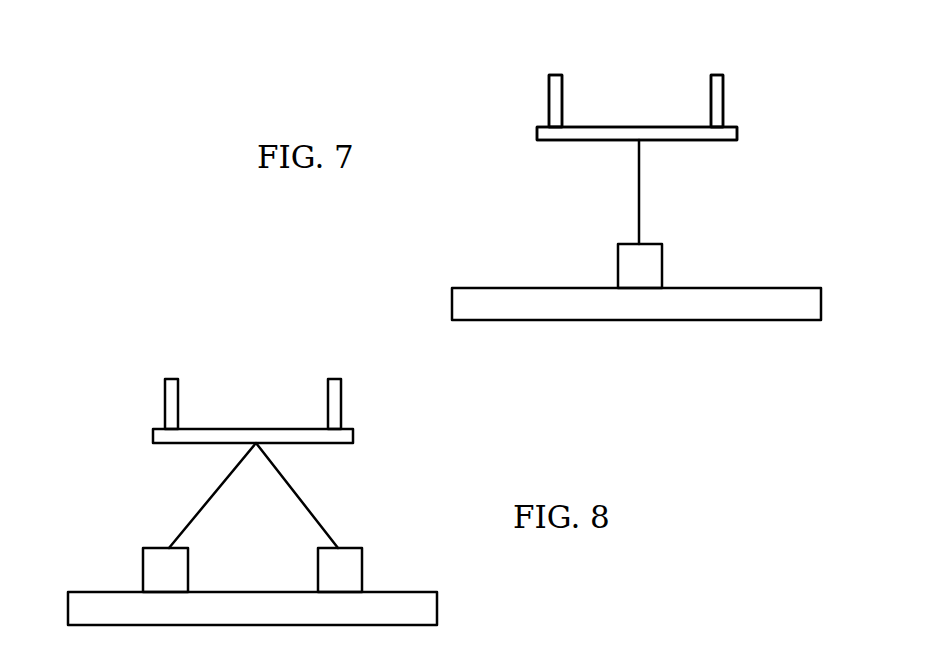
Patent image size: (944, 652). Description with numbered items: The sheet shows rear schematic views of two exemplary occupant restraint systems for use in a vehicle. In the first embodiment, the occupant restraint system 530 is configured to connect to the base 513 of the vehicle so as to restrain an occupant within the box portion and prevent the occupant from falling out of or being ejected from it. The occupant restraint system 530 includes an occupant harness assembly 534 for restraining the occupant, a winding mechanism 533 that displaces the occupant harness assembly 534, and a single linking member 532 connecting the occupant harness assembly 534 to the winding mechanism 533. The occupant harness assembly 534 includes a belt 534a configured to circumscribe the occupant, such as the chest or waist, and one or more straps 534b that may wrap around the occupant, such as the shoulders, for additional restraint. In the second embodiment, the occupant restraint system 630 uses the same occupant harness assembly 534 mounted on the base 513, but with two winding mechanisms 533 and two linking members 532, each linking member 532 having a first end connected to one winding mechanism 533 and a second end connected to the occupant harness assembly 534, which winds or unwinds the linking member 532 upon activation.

In FIG. 7, the occupant restraint system 530 is at (512, 57).
In FIG. 8, the occupant restraint system 630 is at (228, 360).
In FIG. 7, the base 513 is at (563, 313).
In FIG. 8, the base 513 is at (407, 600).
In FIG. 7, the linking member 532 is at (643, 155).
In FIG. 8, the linking member 532 is at (228, 480).
In FIG. 7, the winding mechanism 533 is at (654, 268).
In FIG. 8, the winding mechanism 533 is at (158, 563).
In FIG. 7, the occupant harness assembly 534 is at (580, 152).
In FIG. 8, the occupant harness assembly 534 is at (172, 457).
In FIG. 7, the belt 534a is at (665, 132).
In FIG. 7, the straps 534b is at (552, 99).